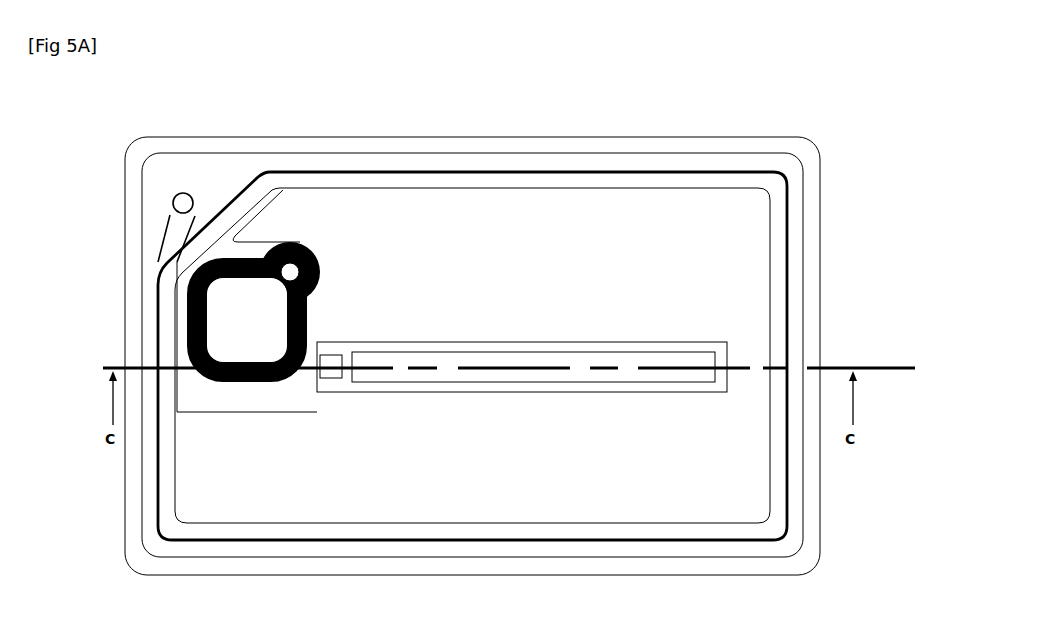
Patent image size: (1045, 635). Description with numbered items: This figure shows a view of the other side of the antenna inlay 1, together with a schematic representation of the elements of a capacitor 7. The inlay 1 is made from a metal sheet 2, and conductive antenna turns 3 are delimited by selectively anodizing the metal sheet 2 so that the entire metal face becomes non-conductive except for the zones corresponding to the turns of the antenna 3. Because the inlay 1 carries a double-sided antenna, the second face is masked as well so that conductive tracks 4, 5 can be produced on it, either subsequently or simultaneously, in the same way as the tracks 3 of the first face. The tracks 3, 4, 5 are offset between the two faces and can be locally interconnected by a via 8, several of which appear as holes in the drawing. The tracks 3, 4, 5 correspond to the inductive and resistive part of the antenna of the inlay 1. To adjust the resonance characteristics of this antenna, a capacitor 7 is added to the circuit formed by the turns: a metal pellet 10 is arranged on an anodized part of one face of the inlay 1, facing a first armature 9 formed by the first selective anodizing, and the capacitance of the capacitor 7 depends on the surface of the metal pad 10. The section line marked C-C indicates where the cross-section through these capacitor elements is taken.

The inlay 1 is at (867, 151).
The metal sheet 2 is at (155, 135).
The conductive antenna turns 3 is at (157, 320).
The conductive tracks 4 is at (150, 343).
The conductive tracks 5 is at (168, 287).
The capacitor 7 is at (666, 400).
The via 8 is at (183, 203).
The first armature 9 is at (505, 352).
The metal pellet 10 is at (623, 343).